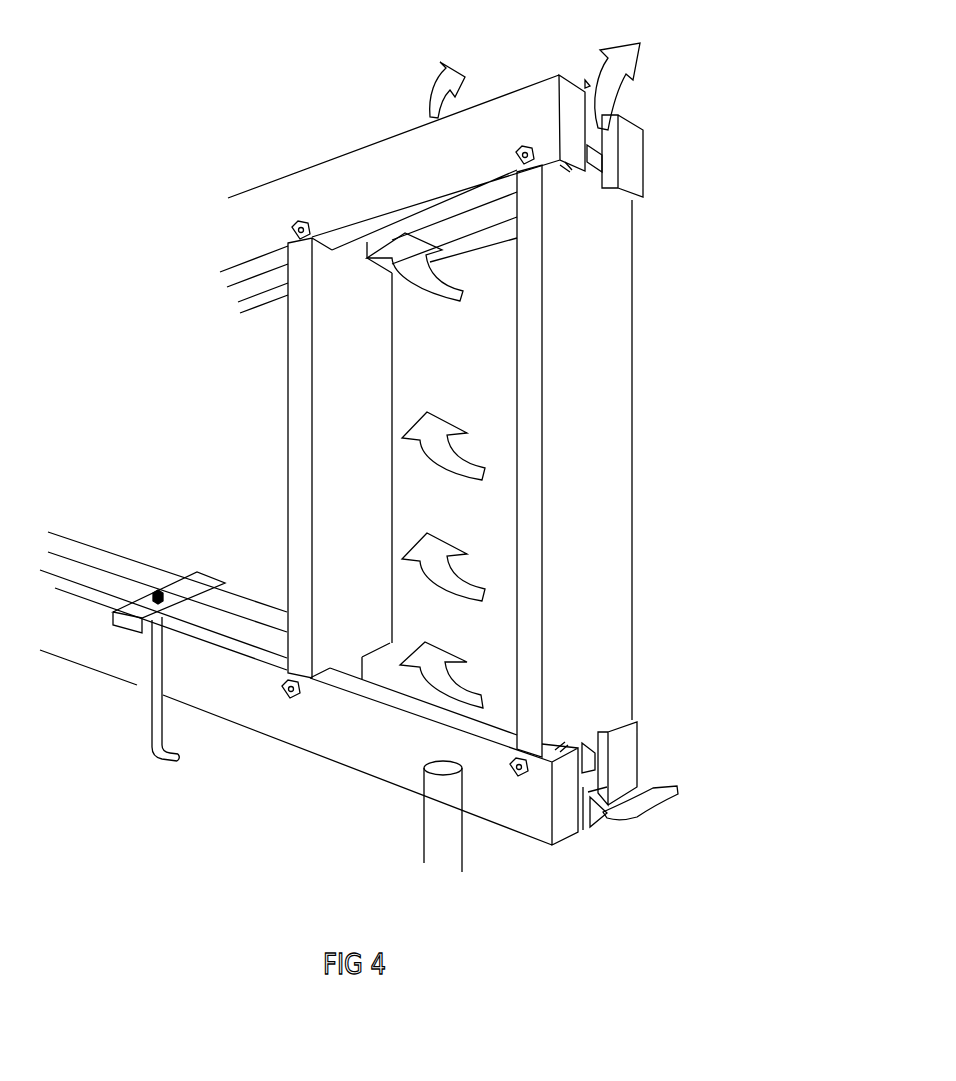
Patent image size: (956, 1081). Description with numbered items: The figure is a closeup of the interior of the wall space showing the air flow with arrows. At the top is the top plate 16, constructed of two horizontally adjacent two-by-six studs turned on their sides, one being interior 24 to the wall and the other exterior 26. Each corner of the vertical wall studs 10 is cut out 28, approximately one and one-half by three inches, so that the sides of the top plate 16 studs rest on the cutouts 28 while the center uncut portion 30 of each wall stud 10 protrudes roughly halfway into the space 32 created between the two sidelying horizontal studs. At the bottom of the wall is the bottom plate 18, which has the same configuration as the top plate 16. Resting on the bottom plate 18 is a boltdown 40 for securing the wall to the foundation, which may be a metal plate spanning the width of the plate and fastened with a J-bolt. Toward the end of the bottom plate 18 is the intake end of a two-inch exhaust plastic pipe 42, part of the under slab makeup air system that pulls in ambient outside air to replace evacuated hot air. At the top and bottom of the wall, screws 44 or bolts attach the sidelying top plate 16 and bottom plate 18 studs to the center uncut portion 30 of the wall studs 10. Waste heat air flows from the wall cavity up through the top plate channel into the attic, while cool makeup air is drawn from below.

The wall stud 10 is at (460, 461).
The top plate 16 is at (695, 155).
The bottom plate 18 is at (700, 778).
The interior stud 24 is at (312, 460).
The exterior stud 26 is at (638, 178).
The cutout 28 is at (630, 205).
The center uncut portion 30 is at (587, 168).
The space 32 is at (588, 130).
The boltdown 40 is at (195, 572).
The exhaust plastic pipe 42 is at (443, 816).
The screws 44 is at (297, 222).